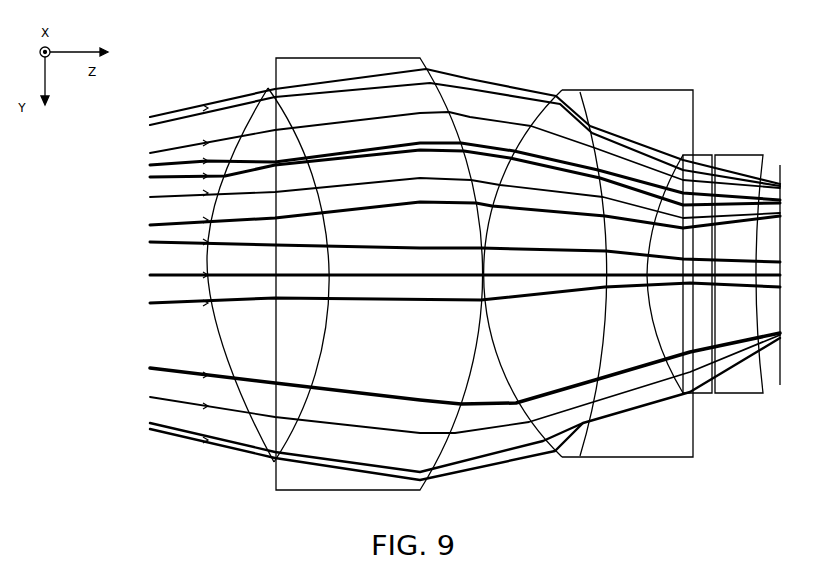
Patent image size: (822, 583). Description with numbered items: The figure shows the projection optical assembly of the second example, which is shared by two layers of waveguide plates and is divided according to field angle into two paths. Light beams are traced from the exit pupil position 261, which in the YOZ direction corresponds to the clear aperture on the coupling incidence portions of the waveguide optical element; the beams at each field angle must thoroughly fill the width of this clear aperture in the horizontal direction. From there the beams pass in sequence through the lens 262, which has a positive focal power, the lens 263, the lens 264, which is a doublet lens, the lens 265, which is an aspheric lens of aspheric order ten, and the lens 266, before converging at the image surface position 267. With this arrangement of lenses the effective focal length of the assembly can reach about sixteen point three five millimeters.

The exit pupil position 261 is at (207, 100).
The lens 262 is at (262, 117).
The lens 263 is at (342, 70).
The lens 264 is at (592, 130).
The lens 265 is at (697, 165).
The lens 266 is at (740, 165).
The image surface position 267 is at (780, 165).